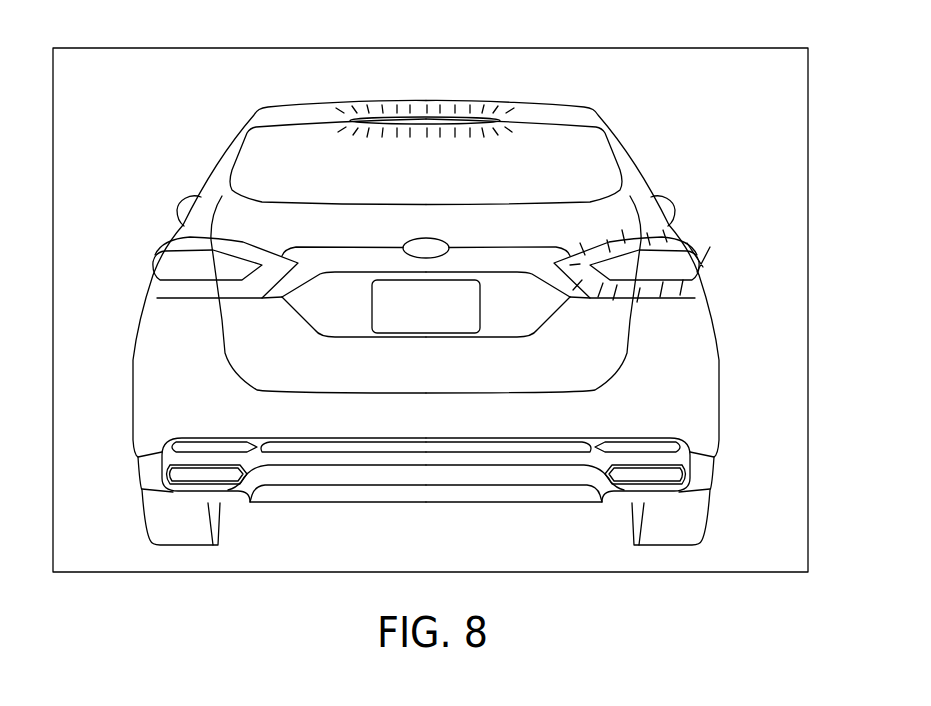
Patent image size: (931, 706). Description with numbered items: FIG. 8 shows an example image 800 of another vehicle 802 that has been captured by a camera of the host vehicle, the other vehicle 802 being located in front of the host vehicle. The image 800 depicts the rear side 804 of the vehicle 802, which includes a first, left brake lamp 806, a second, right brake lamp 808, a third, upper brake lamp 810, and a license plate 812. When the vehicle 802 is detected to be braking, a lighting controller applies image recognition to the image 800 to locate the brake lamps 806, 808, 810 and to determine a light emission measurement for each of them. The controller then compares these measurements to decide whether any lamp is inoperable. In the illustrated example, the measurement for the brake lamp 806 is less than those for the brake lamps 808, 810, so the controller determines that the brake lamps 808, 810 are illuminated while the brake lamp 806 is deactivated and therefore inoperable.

The image 800 is at (700, 48).
The vehicle 802 is at (619, 138).
The rear side 804 is at (444, 427).
The brake lamp 806 is at (182, 262).
The brake lamp 808 is at (673, 262).
The brake lamp 810 is at (434, 120).
The license plate 812 is at (428, 334).